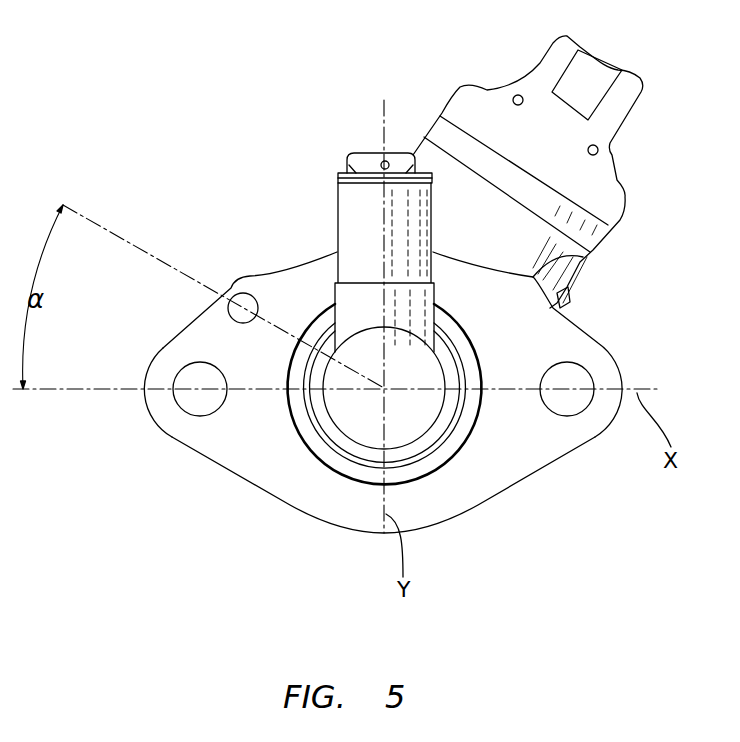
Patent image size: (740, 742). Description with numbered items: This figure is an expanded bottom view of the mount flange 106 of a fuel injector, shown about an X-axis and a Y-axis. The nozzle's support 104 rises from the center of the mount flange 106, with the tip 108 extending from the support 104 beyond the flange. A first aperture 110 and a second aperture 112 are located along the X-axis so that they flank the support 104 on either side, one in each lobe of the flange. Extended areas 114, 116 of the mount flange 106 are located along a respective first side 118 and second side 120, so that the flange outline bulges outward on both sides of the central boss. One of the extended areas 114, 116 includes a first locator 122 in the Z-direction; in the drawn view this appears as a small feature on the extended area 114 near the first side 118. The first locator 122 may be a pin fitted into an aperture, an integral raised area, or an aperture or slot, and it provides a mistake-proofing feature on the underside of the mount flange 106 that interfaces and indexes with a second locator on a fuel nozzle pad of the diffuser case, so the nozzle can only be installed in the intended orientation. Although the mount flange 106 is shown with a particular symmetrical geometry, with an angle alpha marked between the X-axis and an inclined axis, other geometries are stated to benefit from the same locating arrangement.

The support 104 is at (357, 417).
The mount flange 106 is at (517, 485).
The tip 108 is at (353, 218).
The first aperture 110 is at (192, 415).
The second aperture 112 is at (593, 372).
The extended area 114 is at (232, 287).
The extended area 116 is at (588, 260).
The first side 118 is at (192, 332).
The second side 120 is at (590, 337).
The first locator 122 is at (237, 288).